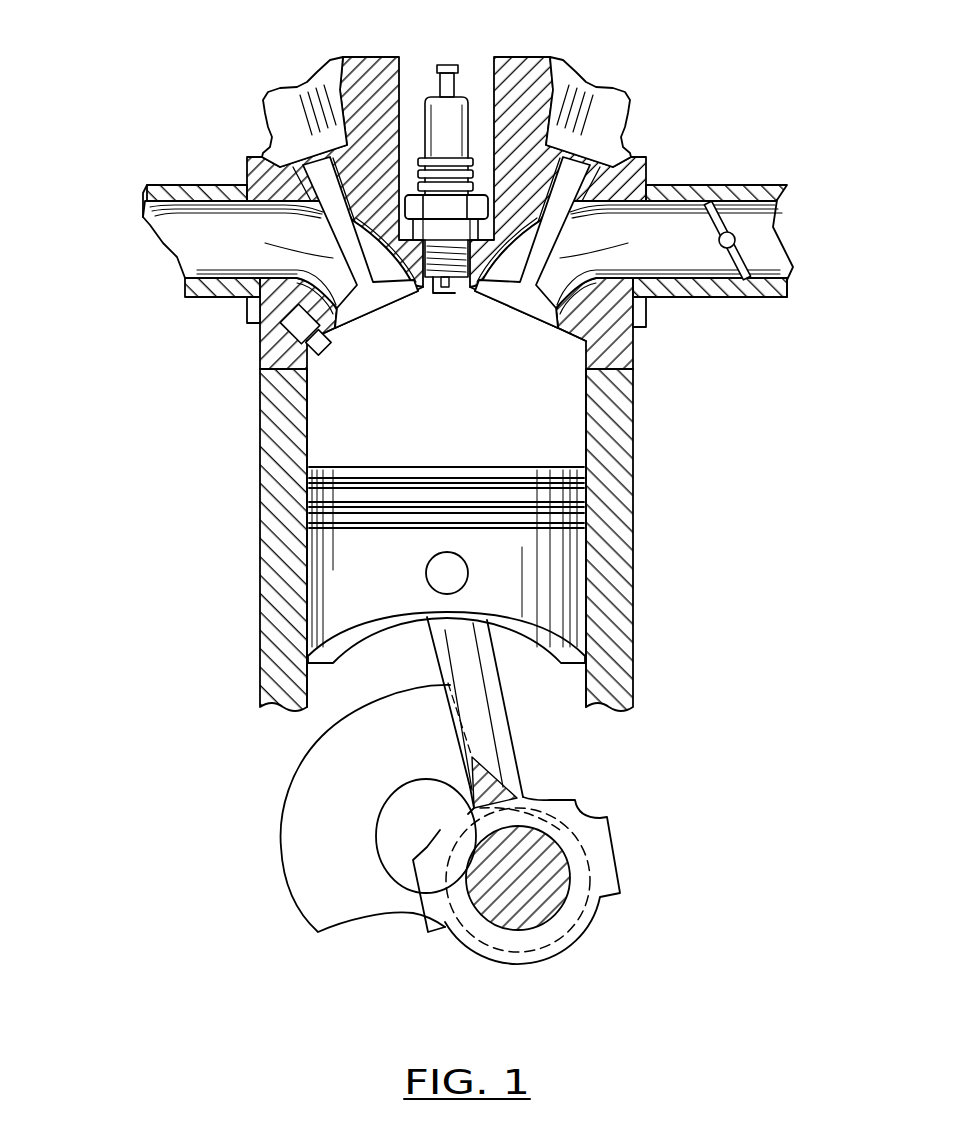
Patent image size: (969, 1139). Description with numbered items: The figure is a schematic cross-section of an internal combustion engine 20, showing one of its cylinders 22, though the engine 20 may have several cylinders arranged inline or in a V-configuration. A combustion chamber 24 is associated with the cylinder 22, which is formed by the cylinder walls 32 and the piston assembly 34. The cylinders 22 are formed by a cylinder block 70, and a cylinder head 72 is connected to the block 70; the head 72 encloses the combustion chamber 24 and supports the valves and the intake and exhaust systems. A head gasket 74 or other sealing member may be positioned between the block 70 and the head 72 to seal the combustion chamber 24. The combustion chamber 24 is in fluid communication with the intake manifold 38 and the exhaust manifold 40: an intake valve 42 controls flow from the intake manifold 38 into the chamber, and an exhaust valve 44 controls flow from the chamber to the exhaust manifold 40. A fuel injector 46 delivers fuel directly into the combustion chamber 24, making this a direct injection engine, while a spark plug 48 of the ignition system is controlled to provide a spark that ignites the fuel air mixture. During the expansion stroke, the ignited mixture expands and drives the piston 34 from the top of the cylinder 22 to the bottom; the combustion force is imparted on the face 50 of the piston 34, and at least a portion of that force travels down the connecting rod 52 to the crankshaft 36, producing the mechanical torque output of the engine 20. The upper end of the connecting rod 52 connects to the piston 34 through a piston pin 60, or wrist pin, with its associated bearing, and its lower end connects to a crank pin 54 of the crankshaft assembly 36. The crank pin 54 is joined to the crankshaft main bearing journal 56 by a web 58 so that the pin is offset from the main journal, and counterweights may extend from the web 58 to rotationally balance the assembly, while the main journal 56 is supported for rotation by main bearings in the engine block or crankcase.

The internal combustion engine 20 is at (131, 93).
The cylinder 22 is at (409, 366).
The combustion chamber 24 is at (510, 366).
The cylinder walls 32 is at (585, 428).
The piston assembly 34 is at (508, 580).
The crankshaft 36 is at (641, 864).
The intake manifold 38 is at (743, 180).
The exhaust manifold 40 is at (175, 178).
The intake valve 42 is at (557, 257).
The exhaust valve 44 is at (337, 260).
The fuel injector 46 is at (293, 327).
The spark plug 48 is at (460, 97).
The face of the piston 50 is at (405, 458).
The connecting rod 52 is at (505, 728).
The crank pin 54 is at (543, 858).
The crankshaft main bearing journal 56 is at (378, 835).
The web 58 is at (345, 773).
The piston pin 60 is at (443, 573).
The cylinder block 70 is at (633, 487).
The cylinder head 72 is at (607, 305).
The head gasket 74 is at (262, 370).